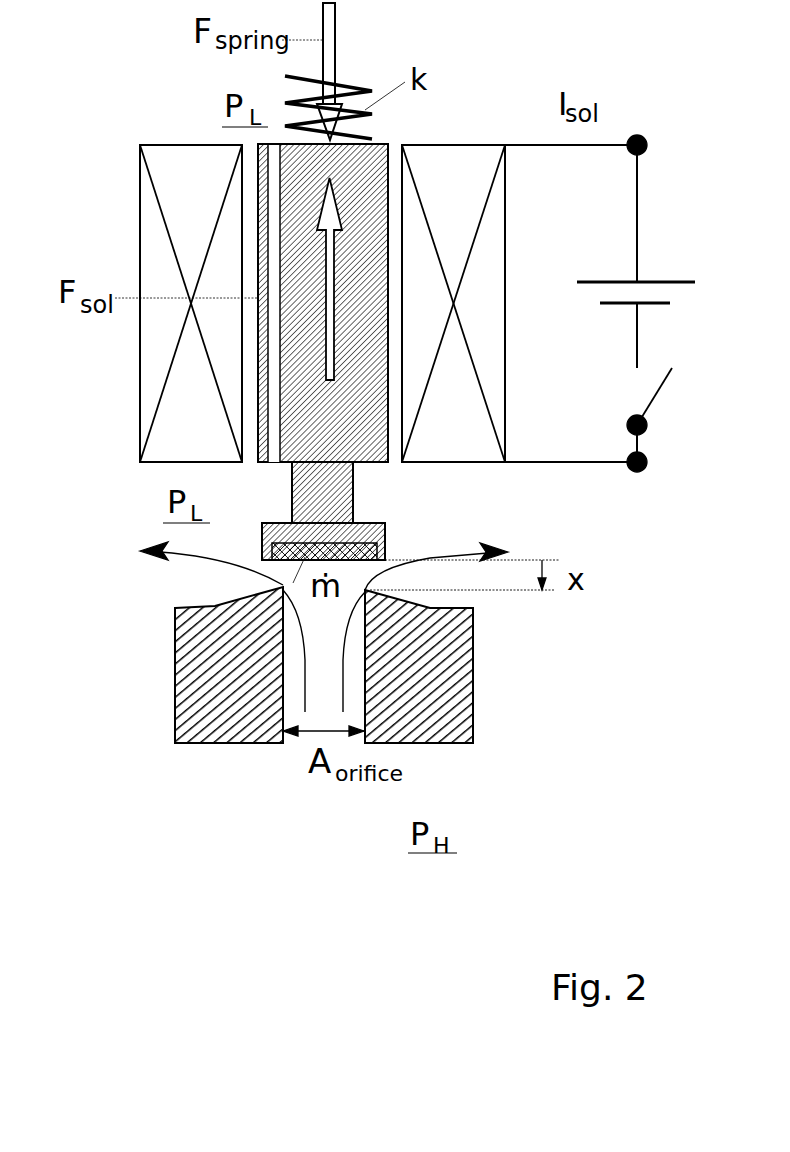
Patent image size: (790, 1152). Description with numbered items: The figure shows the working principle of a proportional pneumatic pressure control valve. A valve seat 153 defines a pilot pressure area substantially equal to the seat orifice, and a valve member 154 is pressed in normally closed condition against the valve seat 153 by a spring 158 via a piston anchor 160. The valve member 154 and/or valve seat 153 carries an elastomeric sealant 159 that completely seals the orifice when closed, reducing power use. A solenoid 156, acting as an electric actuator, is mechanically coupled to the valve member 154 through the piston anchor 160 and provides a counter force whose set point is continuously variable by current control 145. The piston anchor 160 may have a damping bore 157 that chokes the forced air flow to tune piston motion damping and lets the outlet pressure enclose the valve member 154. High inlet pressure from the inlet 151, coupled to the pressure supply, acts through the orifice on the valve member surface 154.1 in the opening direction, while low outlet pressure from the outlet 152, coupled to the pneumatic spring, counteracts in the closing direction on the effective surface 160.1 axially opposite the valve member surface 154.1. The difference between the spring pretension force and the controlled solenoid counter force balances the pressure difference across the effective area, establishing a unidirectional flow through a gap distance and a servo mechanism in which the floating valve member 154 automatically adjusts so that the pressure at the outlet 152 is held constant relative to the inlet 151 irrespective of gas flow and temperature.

The current control 145 is at (638, 198).
The inlet 151 is at (350, 843).
The outlet 152 is at (137, 523).
The valve seat 153 is at (433, 676).
The valve member 154 is at (369, 511).
The valve member surface 154.1 is at (283, 585).
The solenoid 156 is at (482, 357).
The damping bore 157 is at (276, 437).
The spring 158 is at (352, 83).
The elastomeric sealant 159 is at (366, 553).
The piston anchor 160 is at (327, 248).
The effective surface 160.1 is at (373, 143).